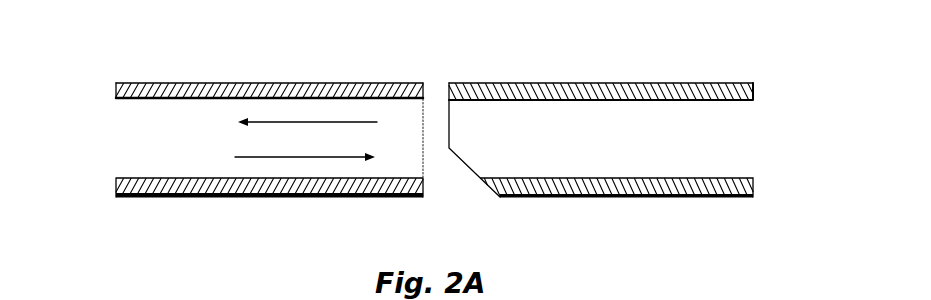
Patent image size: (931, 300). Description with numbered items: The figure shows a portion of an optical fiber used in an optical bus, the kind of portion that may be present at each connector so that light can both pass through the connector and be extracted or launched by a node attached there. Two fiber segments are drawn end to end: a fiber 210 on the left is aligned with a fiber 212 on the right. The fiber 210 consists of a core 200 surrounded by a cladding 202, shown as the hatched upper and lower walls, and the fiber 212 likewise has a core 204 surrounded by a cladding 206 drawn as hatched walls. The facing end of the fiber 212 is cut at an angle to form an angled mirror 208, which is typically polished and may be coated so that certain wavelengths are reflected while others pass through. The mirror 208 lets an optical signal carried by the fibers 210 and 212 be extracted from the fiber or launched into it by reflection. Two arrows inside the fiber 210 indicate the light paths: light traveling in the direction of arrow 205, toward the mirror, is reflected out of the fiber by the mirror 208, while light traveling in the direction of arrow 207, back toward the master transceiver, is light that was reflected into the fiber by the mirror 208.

The core 200 is at (234, 134).
The cladding 202 is at (234, 134).
The core 204 is at (638, 147).
The arrow 205 is at (305, 157).
The cladding 206 is at (638, 134).
The arrow 207 is at (305, 122).
The angled mirror 208 is at (470, 172).
The fiber 210 is at (262, 83).
The fiber 212 is at (610, 83).